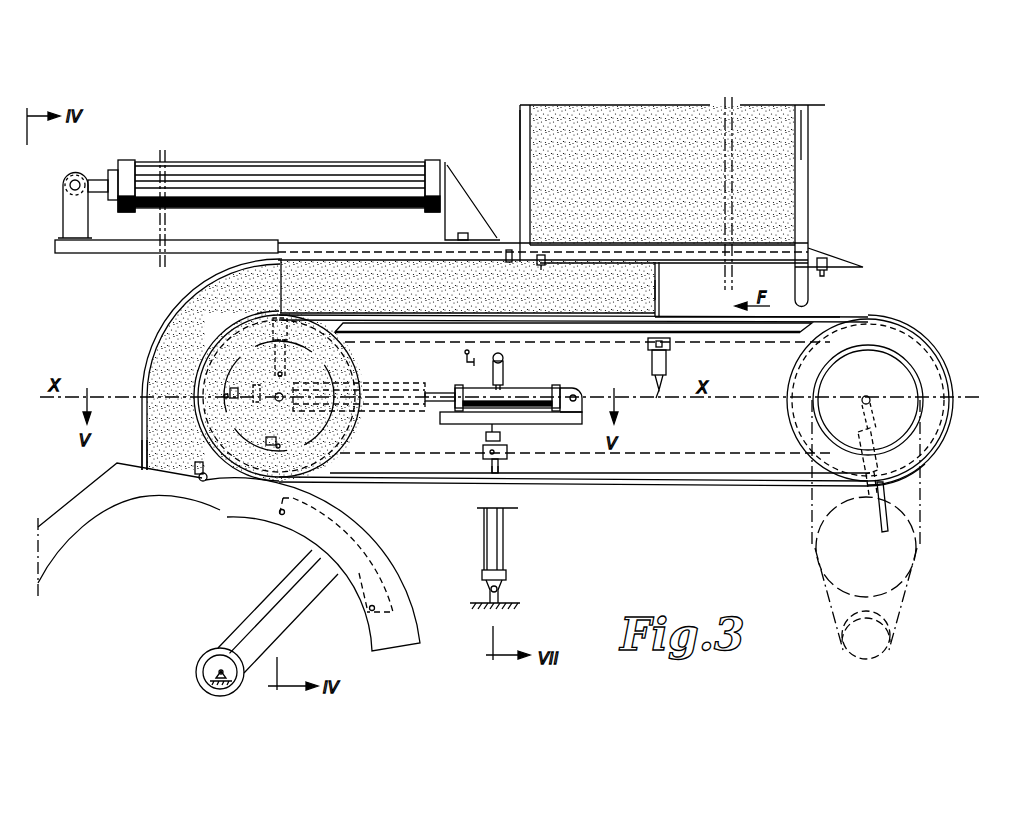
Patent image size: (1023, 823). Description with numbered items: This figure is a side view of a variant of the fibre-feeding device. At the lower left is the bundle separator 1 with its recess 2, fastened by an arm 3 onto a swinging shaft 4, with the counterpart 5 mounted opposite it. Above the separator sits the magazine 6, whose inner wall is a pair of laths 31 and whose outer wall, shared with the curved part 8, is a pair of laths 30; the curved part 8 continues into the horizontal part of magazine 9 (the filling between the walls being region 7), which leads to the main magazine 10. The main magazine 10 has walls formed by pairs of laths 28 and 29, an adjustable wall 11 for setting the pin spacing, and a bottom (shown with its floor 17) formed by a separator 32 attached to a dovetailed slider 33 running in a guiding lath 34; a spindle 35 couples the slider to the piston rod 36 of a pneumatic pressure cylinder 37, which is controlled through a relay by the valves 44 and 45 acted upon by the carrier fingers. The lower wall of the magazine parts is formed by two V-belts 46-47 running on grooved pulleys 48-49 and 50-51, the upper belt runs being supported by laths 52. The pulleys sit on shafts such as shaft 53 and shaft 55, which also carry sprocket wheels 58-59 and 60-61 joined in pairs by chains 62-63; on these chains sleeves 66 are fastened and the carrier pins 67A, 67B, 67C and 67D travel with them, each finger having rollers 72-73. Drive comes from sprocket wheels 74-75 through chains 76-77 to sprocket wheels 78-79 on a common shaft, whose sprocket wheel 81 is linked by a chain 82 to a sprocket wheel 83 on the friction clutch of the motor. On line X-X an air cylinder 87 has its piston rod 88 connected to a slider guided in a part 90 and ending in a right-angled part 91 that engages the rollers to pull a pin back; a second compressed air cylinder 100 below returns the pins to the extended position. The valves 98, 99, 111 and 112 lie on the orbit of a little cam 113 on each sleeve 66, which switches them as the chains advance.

The bundle separator 1 is at (378, 557).
The recess 2 is at (206, 482).
The arm 3 is at (267, 601).
The swinging shaft 4 is at (212, 670).
The counterpart 5 is at (63, 537).
The magazine 6 is at (142, 426).
The frame filling 7 is at (167, 437).
The curved part 8 is at (147, 336).
The horizontal part of magazine 9 is at (380, 276).
The main magazine 10 is at (514, 157).
The adjustable wall 11 is at (816, 168).
The hopper bottom 17 is at (782, 140).
The lath 28 is at (520, 128).
The lath 29 is at (808, 198).
The laths 30 is at (182, 300).
The laths 31 is at (199, 462).
The separator 32 is at (846, 266).
The dovetailed slider 33 is at (122, 247).
The guiding lath 34 is at (293, 252).
The spindle 35 is at (65, 186).
The piston rod 36 is at (97, 178).
The pneumatic pressure cylinder 37 is at (297, 170).
The valve 44 is at (825, 270).
The valve 45 is at (545, 258).
The V-belts 46-47 is at (620, 478).
The grooved pulleys 48-49 is at (357, 366).
The grooved pulleys 50-51 is at (921, 337).
The laths 52 is at (733, 330).
The shaft 53 is at (280, 401).
The shaft 55 is at (870, 397).
The sprocket wheels 58-59 is at (332, 422).
The sprocket wheels 60-61 is at (918, 372).
The chains 62-63 is at (827, 344).
The sleeve 66 is at (501, 440).
The carrier pin 67A is at (284, 289).
The carrier pin 67B is at (662, 292).
The carrier pin 67C is at (879, 520).
The carrier pin 67D is at (499, 466).
The rollers 72-73 is at (504, 360).
The sprocket wheels 74-75 is at (912, 430).
The chains 76-77 is at (926, 474).
The sprocket wheels 78-79 is at (826, 583).
The sprocket wheel 81 is at (905, 572).
The chain 82 is at (831, 613).
The sprocket wheel 83 is at (858, 644).
The air cylinder 87 is at (533, 395).
The piston rod 88 is at (445, 402).
The part 90 is at (426, 386).
The right-angled part 91 is at (256, 403).
The valve 98 is at (238, 390).
The valve 99 is at (277, 441).
The compressed air cylinder 100 is at (497, 544).
The valve 111 is at (486, 438).
The valve 112 is at (474, 366).
The little cam 113 is at (648, 346).